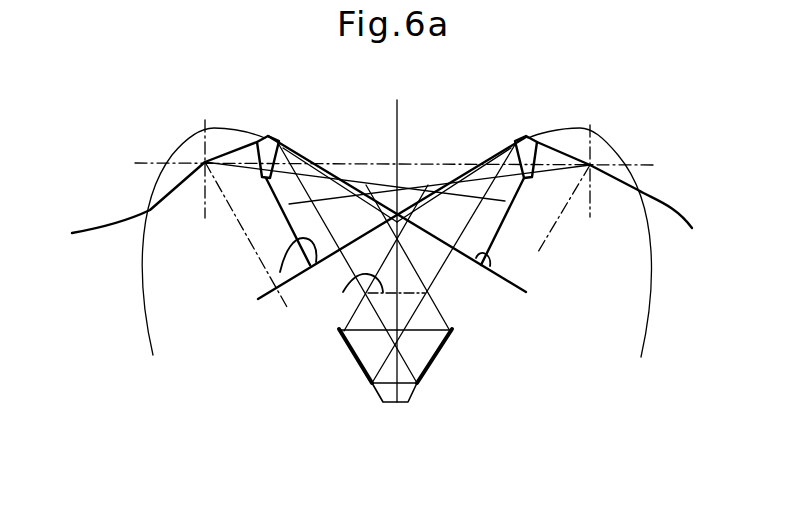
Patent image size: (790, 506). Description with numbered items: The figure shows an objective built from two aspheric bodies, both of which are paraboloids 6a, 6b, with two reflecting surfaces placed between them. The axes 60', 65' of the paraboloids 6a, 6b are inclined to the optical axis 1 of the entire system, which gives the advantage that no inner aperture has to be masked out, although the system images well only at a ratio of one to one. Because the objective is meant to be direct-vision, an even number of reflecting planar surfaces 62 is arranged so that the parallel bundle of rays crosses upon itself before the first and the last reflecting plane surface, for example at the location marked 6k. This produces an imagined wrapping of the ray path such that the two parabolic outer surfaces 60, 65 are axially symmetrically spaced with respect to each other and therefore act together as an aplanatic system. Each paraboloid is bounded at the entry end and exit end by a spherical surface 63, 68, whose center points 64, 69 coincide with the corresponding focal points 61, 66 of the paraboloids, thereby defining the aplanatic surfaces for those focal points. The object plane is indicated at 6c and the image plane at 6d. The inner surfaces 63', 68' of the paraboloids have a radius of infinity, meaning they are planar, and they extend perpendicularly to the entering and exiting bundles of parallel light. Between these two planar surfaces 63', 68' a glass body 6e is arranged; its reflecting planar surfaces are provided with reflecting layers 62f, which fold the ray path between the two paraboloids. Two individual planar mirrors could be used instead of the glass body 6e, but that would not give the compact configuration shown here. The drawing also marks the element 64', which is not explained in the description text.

The optical axis 1 is at (147, 160).
The paraboloid 6a is at (348, 183).
The paraboloid 6b is at (462, 177).
The object plane 6c is at (205, 122).
The image plane 6d is at (592, 125).
The glass body 6e is at (450, 306).
The crossing location of ray bundle 6k is at (338, 334).
The parabolic outer surface 60 is at (365, 190).
The axis of paraboloid 60' is at (291, 319).
The focal point 61 is at (122, 215).
The reflecting planar surface 62 is at (373, 392).
The reflecting layer 62f is at (363, 372).
The spherical surface 63 is at (242, 115).
The inner spherical surface 63' is at (200, 308).
The center point 64 is at (234, 241).
The flank of left jaw 64' is at (212, 223).
The parabolic outer surface 65 is at (424, 180).
The axis of paraboloid 65' is at (567, 254).
The focal point 66 is at (653, 213).
The spherical surface 68 is at (552, 134).
The inner spherical surface 68' is at (522, 290).
The center point 69 is at (692, 228).